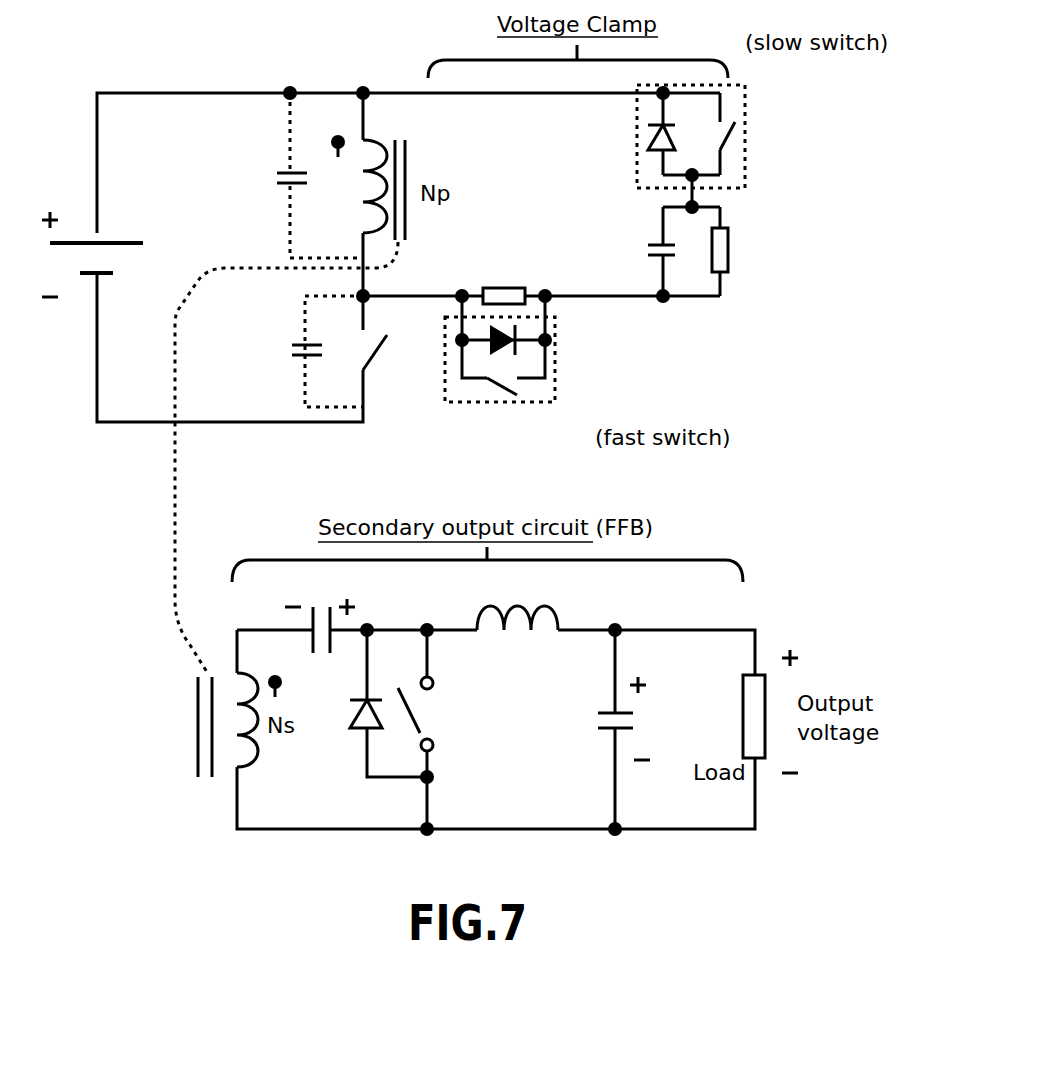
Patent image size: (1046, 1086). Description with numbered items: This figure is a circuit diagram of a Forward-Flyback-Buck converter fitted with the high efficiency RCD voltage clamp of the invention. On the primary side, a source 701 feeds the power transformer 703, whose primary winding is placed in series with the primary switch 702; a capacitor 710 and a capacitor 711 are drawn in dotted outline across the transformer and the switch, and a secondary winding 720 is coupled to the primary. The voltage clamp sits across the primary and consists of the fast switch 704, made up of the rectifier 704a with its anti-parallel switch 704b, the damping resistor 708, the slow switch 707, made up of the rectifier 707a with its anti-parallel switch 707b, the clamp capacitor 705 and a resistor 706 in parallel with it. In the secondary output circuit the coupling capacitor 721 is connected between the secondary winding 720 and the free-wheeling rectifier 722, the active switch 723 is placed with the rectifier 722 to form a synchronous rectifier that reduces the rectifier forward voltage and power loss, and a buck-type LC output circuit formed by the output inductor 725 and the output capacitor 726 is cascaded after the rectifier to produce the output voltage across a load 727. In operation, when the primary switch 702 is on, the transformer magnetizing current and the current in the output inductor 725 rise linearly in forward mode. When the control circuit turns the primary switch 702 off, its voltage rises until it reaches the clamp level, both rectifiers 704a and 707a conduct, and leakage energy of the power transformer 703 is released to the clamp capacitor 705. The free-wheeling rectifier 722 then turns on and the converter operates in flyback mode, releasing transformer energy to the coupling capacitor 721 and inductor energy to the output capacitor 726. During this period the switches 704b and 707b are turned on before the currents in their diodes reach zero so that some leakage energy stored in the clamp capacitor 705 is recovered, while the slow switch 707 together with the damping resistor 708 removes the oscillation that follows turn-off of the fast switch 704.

The DC voltage source (battery) 701 is at (90, 283).
The primary switch 702 is at (377, 357).
The power transformer 703 is at (345, 188).
The fast switch 704 is at (546, 378).
The rectifier 704a is at (525, 347).
The switch 704b is at (500, 393).
The clamp capacitor 705 is at (647, 245).
The clamp resistor 706 is at (730, 252).
The slow switch 707 is at (684, 136).
The rectifier 707a is at (648, 135).
The switch 707b is at (733, 143).
The damping resistor 708 is at (500, 287).
The capacitor 710 is at (270, 168).
The capacitor 711 is at (287, 345).
The transformer secondary winding Ns 720 is at (192, 732).
The coupling capacitor 721 is at (357, 598).
The free-wheeling rectifier 722 is at (353, 733).
The active switch 723 is at (425, 713).
The output inductor 725 is at (560, 608).
The output capacitor 726 is at (598, 737).
The load 727 is at (762, 763).